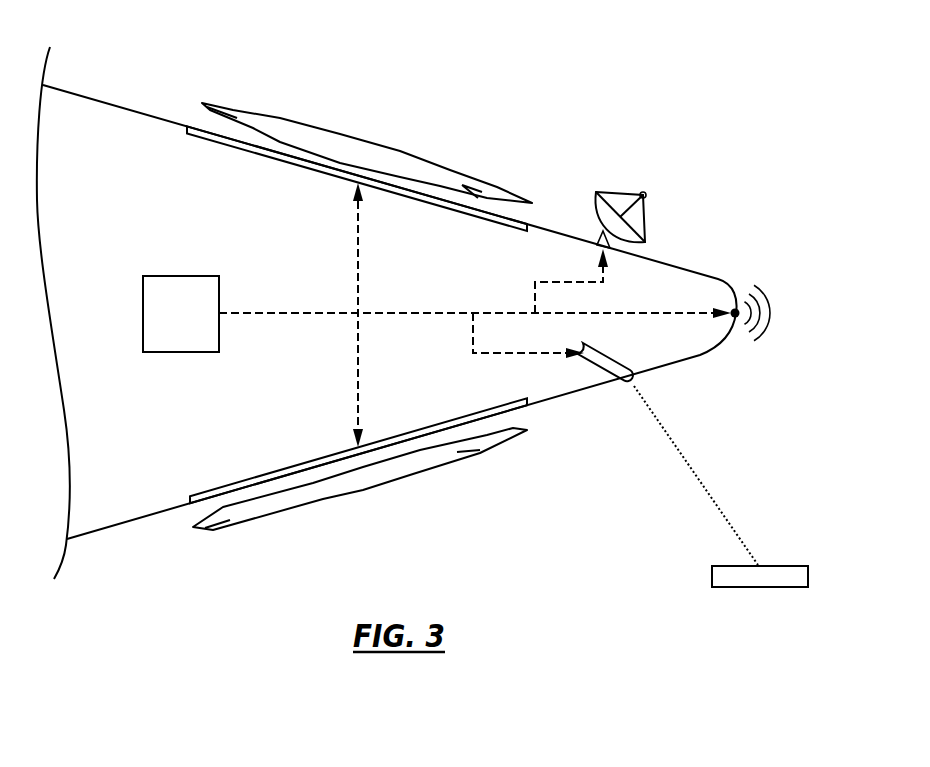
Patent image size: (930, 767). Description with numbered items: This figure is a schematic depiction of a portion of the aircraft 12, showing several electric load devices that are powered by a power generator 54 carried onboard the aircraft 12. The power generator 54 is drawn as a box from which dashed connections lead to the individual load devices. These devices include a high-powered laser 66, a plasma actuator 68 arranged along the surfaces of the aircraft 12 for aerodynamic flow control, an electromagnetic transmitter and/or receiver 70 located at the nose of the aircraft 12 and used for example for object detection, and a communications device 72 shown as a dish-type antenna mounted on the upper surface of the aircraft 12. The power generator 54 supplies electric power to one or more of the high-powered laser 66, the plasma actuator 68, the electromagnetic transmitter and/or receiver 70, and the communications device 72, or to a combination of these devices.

The aircraft 12 is at (120, 106).
The power generator 54 is at (181, 314).
The high-powered laser 66 is at (615, 383).
The plasma actuator 68 is at (258, 154).
The electromagnetic transmitter and/or receiver 70 is at (737, 318).
The communications device 72 is at (644, 213).